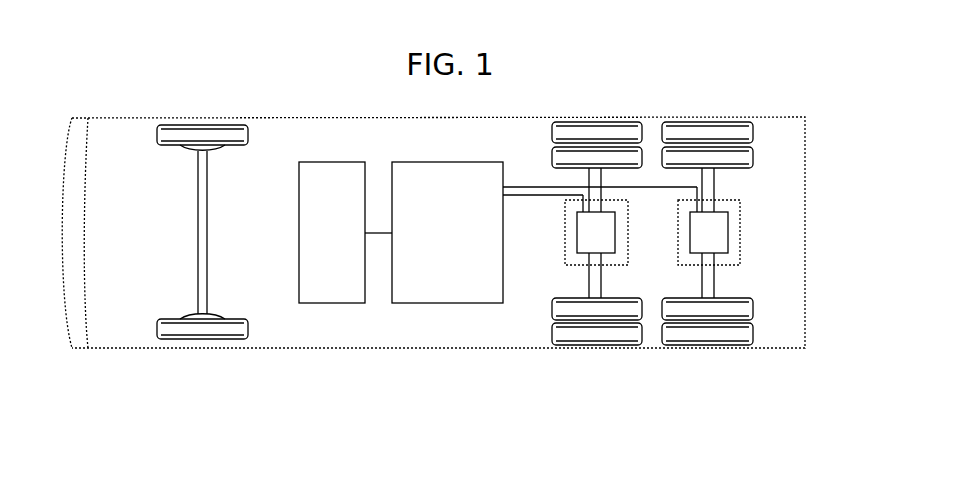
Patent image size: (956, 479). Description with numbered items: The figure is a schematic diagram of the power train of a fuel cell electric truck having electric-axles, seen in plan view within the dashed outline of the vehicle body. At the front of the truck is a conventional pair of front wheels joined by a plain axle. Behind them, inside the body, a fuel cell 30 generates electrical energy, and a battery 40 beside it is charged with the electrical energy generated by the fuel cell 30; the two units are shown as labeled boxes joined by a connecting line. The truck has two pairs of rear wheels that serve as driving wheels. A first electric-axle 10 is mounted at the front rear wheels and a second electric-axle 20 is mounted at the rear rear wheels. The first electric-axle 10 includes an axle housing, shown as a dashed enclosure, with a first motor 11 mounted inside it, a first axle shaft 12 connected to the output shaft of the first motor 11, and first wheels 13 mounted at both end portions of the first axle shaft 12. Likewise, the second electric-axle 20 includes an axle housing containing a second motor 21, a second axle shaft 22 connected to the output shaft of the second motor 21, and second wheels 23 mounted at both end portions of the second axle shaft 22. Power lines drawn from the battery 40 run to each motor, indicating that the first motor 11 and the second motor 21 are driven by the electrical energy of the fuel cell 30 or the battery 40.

The first electric-axle 10 is at (587, 263).
The first motor 11 is at (577, 226).
The first axle shaft 12 is at (597, 283).
The first wheels 13 is at (593, 335).
The second electric-axle 20 is at (756, 263).
The second motor 21 is at (728, 216).
The second axle shaft 22 is at (710, 283).
The second wheels 23 is at (707, 335).
The fuel cell 30 is at (332, 303).
The battery 40 is at (467, 303).